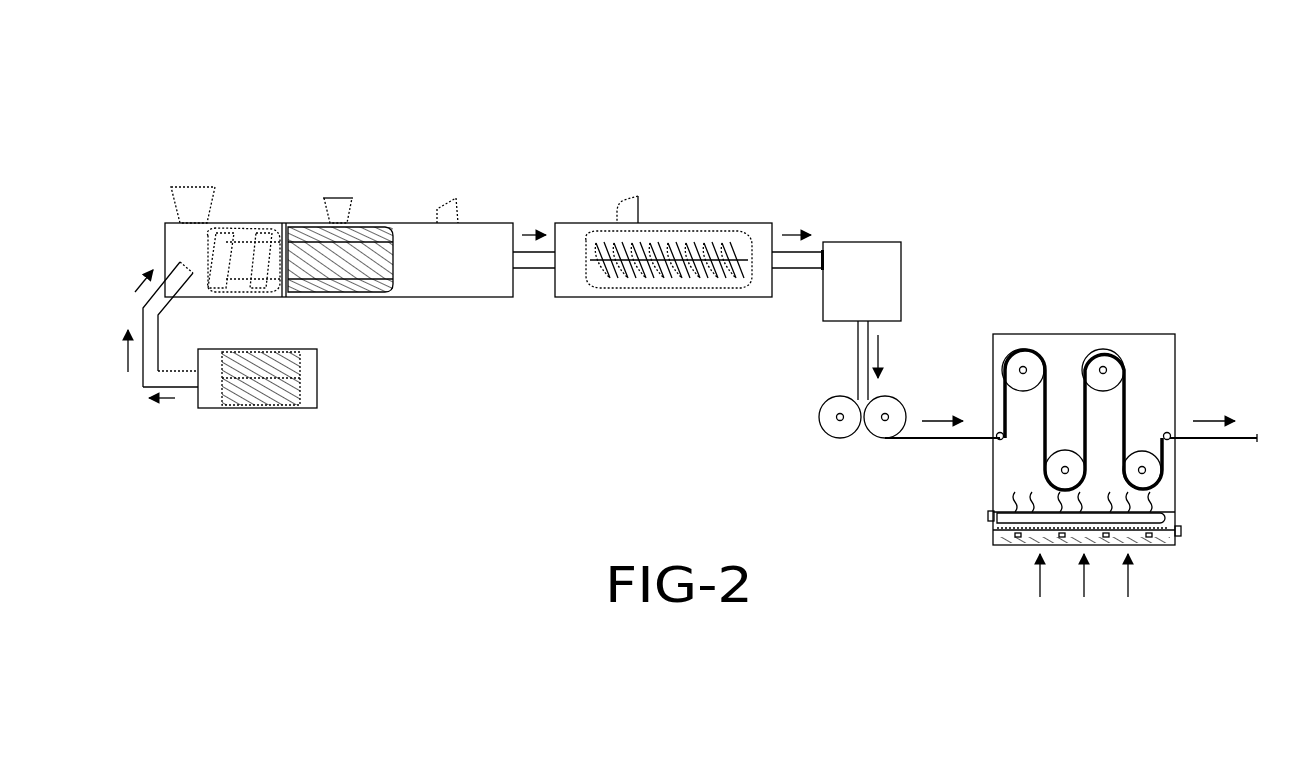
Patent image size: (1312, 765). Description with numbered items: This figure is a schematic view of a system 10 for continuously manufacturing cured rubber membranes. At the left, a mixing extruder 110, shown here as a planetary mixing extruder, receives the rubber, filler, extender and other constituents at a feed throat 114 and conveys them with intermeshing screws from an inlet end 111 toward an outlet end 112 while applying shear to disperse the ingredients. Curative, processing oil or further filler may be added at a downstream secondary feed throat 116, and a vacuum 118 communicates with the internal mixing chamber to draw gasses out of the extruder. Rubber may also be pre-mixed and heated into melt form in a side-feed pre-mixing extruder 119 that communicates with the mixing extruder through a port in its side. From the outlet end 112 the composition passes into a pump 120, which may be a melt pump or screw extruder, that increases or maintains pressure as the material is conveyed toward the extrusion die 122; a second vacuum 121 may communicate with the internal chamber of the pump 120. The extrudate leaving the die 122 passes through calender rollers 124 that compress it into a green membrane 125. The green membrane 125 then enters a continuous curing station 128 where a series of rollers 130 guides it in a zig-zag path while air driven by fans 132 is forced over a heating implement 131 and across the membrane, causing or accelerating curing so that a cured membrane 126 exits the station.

The thermoplastic sheet manufacturing system 10 is at (596, 156).
The mixing extruder 110 is at (407, 134).
The inlet end 111 is at (164, 223).
The outlet end 112 is at (514, 289).
The feed throat 114 is at (205, 187).
The secondary feed throat 116 is at (336, 198).
The vacuum 118 is at (458, 207).
The pre-mixing extruder 119 is at (317, 390).
The pump 120 is at (722, 223).
The vacuum 121 is at (640, 208).
The extrusion die 122 is at (885, 242).
The calender rollers 124 is at (820, 424).
The green membrane 125 is at (906, 440).
The cured membrane 126 is at (1200, 440).
The continuous curing station 128 is at (1070, 438).
The rollers 130 is at (1012, 355).
The heating implement 131 is at (1000, 525).
The fans 132 is at (1018, 546).